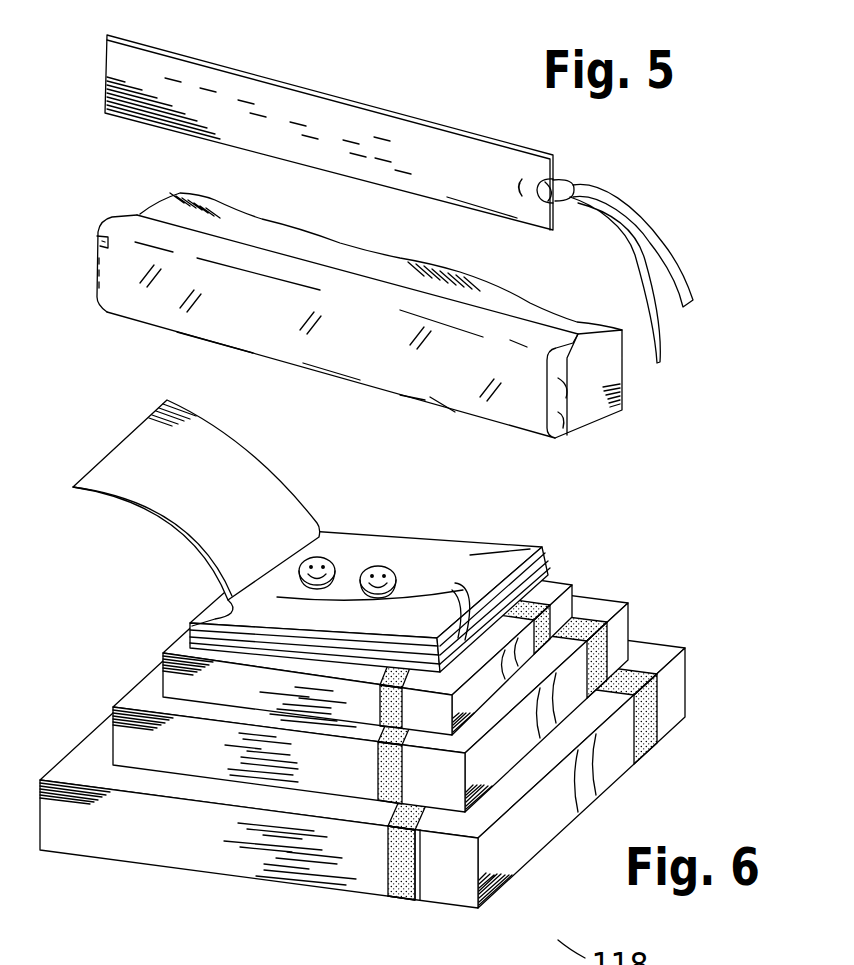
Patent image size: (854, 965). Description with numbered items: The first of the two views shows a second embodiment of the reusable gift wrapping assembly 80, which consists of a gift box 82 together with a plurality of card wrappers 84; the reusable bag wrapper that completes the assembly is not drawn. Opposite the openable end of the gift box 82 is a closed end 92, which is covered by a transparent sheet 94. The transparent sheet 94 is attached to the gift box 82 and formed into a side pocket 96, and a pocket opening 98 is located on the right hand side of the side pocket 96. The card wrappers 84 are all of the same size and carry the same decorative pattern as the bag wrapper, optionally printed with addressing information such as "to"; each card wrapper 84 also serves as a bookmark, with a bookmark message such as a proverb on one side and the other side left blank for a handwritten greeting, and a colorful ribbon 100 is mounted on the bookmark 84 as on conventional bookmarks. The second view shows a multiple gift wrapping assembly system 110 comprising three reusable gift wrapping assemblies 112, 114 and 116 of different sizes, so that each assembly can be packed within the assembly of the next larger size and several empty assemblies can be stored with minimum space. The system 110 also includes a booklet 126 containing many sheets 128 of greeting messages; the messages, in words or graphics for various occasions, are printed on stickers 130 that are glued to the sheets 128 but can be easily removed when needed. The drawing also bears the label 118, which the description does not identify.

In FIG. 5, the reusable gift wrapping assembly 80 is at (405, 281).
In FIG. 5, the gift box 82 is at (381, 330).
In FIG. 5, the card wrappers 84 is at (405, 127).
In FIG. 5, the closed end 92 is at (560, 380).
In FIG. 5, the transparent sheet 94 is at (135, 313).
In FIG. 5, the side pocket 96 is at (465, 403).
In FIG. 5, the pocket opening 98 is at (557, 418).
In FIG. 5, the colorful ribbon 100 is at (607, 185).
In FIG. 6, the multiple gift wrapping assembly system 110 is at (379, 682).
In FIG. 6, the reusable gift wrapping assembly 112 is at (173, 648).
In FIG. 6, the reusable gift wrapping assembly 114 is at (132, 697).
In FIG. 6, the reusable gift wrapping assembly 116 is at (76, 757).
In FIG. 6, the ribbon bands 118 is at (325, 935).
In FIG. 6, the booklet 126 is at (263, 480).
In FIG. 6, the sheets 128 is at (565, 573).
In FIG. 6, the stickers 130 is at (382, 565).